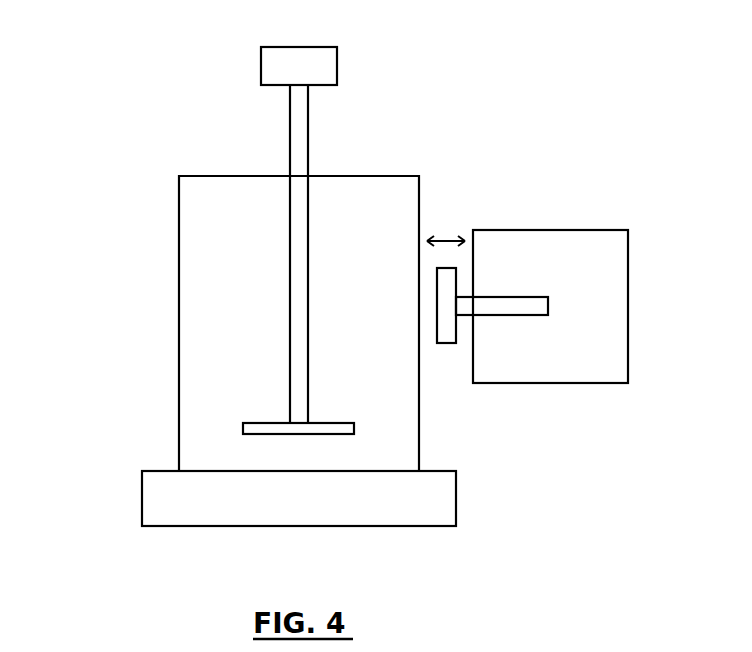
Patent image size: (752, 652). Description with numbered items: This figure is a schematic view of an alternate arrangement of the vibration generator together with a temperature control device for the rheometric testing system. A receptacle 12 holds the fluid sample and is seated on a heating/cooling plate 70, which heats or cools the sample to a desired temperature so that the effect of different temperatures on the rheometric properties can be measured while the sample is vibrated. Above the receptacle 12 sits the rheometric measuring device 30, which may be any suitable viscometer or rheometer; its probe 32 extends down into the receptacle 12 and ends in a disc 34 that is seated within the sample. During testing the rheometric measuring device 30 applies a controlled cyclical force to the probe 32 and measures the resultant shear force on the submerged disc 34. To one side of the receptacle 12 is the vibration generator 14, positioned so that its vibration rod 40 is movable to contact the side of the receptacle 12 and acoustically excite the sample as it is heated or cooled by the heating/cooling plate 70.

The receptacle 12 is at (176, 257).
The vibration generator 14 is at (556, 230).
The rheometric measuring device 30 is at (298, 46).
The probe 32 is at (308, 148).
The disc 34 is at (242, 424).
The vibration rod 40 is at (462, 316).
The heating/cooling plate 70 is at (141, 498).